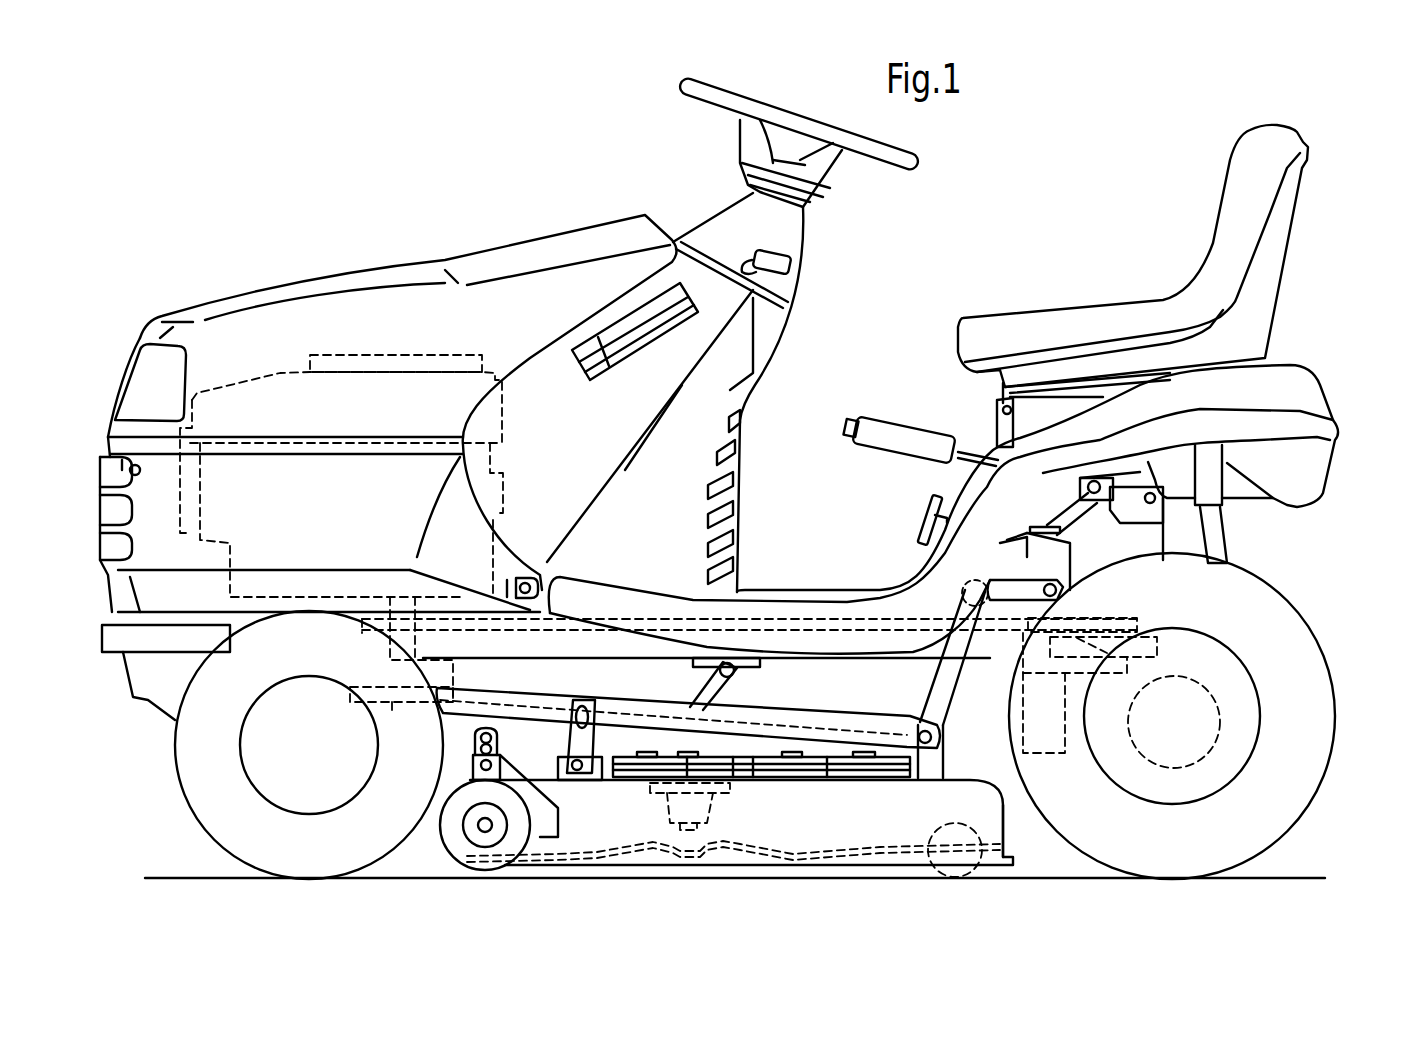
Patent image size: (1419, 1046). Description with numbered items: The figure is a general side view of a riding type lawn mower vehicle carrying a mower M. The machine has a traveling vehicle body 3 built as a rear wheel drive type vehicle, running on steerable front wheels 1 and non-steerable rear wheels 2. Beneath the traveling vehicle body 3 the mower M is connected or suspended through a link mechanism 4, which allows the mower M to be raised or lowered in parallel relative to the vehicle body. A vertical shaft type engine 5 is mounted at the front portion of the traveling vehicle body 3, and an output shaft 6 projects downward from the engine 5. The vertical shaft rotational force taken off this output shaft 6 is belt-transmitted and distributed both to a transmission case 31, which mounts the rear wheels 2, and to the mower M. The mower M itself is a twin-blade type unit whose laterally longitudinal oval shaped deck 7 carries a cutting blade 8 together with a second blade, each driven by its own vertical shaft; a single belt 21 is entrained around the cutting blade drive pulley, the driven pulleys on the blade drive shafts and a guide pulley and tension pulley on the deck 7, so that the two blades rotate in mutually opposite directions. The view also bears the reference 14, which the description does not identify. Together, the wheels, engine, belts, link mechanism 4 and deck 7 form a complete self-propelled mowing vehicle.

The front wheels 1 is at (214, 824).
The rear wheels 2 is at (1287, 812).
The traveling vehicle body 3 is at (588, 206).
The link mechanism 4 is at (549, 685).
The vertical shaft type engine 5 is at (262, 373).
The output shaft 6 is at (390, 663).
The front axle 14 is at (423, 707).
The deck 7 is at (740, 830).
The cutting blade 8 is at (593, 870).
The single belt 21 is at (743, 767).
The transmission case 31 is at (1080, 753).
The mower M is at (1012, 832).